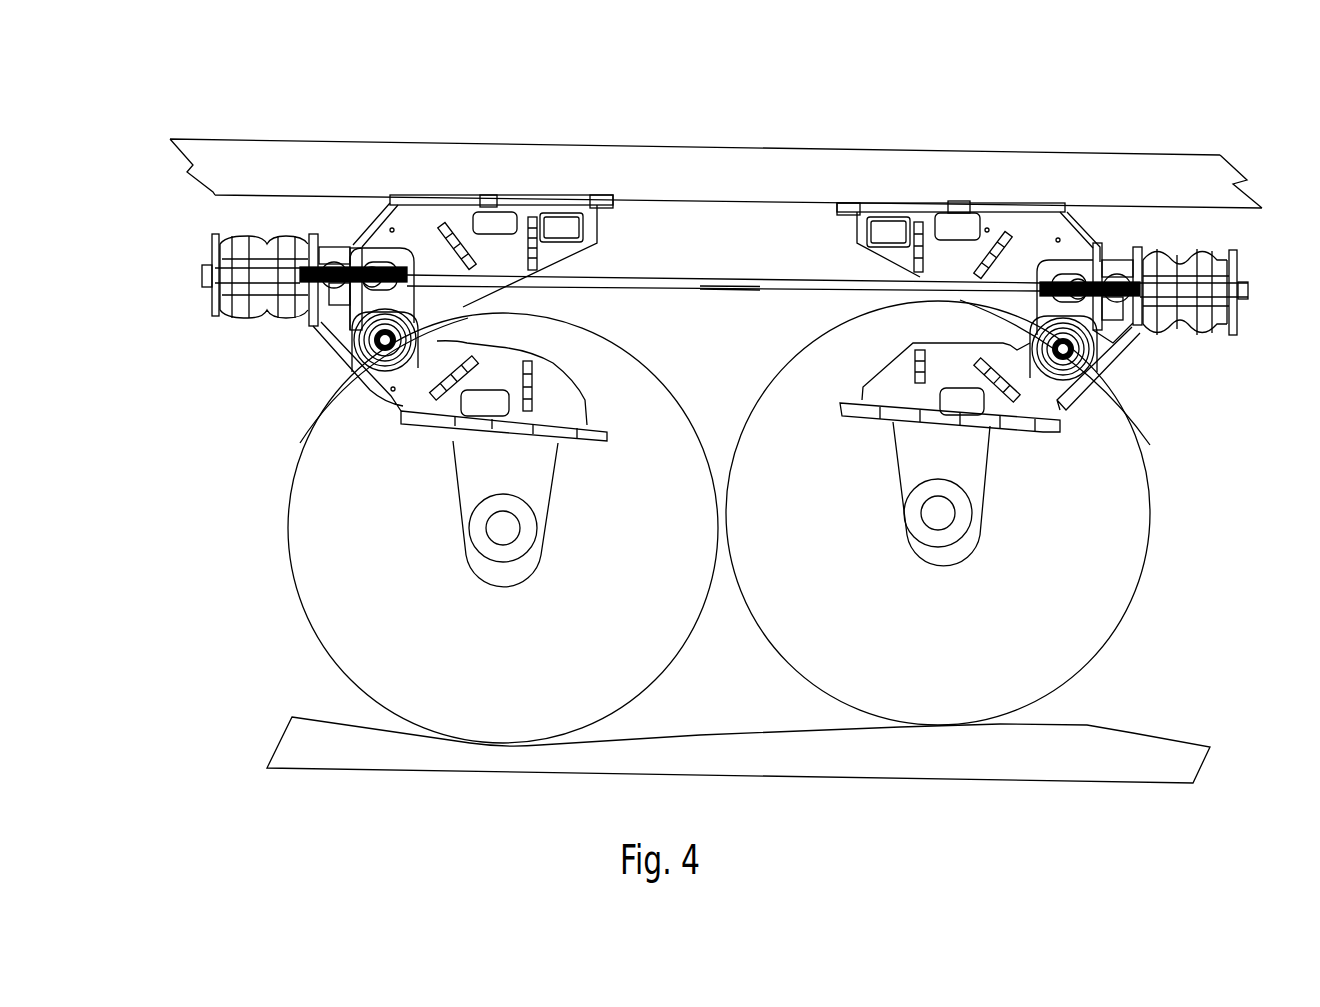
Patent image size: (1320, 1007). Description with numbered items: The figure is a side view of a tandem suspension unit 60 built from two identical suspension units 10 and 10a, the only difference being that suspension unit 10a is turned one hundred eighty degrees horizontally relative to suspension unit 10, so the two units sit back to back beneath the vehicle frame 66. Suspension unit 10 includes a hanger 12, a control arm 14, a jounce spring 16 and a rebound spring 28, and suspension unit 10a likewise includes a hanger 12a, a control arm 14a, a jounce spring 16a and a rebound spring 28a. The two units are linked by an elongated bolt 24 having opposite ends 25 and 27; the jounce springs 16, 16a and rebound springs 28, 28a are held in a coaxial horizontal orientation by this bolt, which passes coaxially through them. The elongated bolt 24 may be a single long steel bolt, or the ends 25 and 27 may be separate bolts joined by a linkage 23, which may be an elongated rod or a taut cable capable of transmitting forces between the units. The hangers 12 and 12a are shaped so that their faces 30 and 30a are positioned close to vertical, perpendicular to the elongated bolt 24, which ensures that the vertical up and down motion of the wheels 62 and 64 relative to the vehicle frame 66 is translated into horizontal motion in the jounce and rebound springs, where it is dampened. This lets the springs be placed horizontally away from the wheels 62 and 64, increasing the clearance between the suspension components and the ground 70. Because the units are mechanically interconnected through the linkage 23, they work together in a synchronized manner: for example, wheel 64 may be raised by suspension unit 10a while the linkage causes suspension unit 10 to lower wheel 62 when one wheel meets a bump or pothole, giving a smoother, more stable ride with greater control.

The suspension unit 10 is at (360, 238).
The suspension unit 10a is at (1100, 222).
The hanger 12 is at (427, 213).
The hanger 12a is at (1023, 223).
The control arm 14 is at (410, 397).
The control arm 14a is at (1055, 405).
The jounce spring 16 is at (248, 232).
The jounce spring 16a is at (1203, 225).
The linkage 23 is at (733, 292).
The elongated bolt 24 is at (690, 276).
The end 25 is at (232, 300).
The end 27 is at (1217, 337).
The rebound spring 28 is at (345, 252).
The rebound spring 28a is at (1140, 243).
The face 30 is at (463, 307).
The face 30a is at (1100, 327).
The tandem suspension unit 60 is at (210, 427).
The wheel 62 is at (320, 613).
The wheel 64 is at (1107, 620).
The vehicle frame 66 is at (797, 167).
The ground 70 is at (1137, 733).